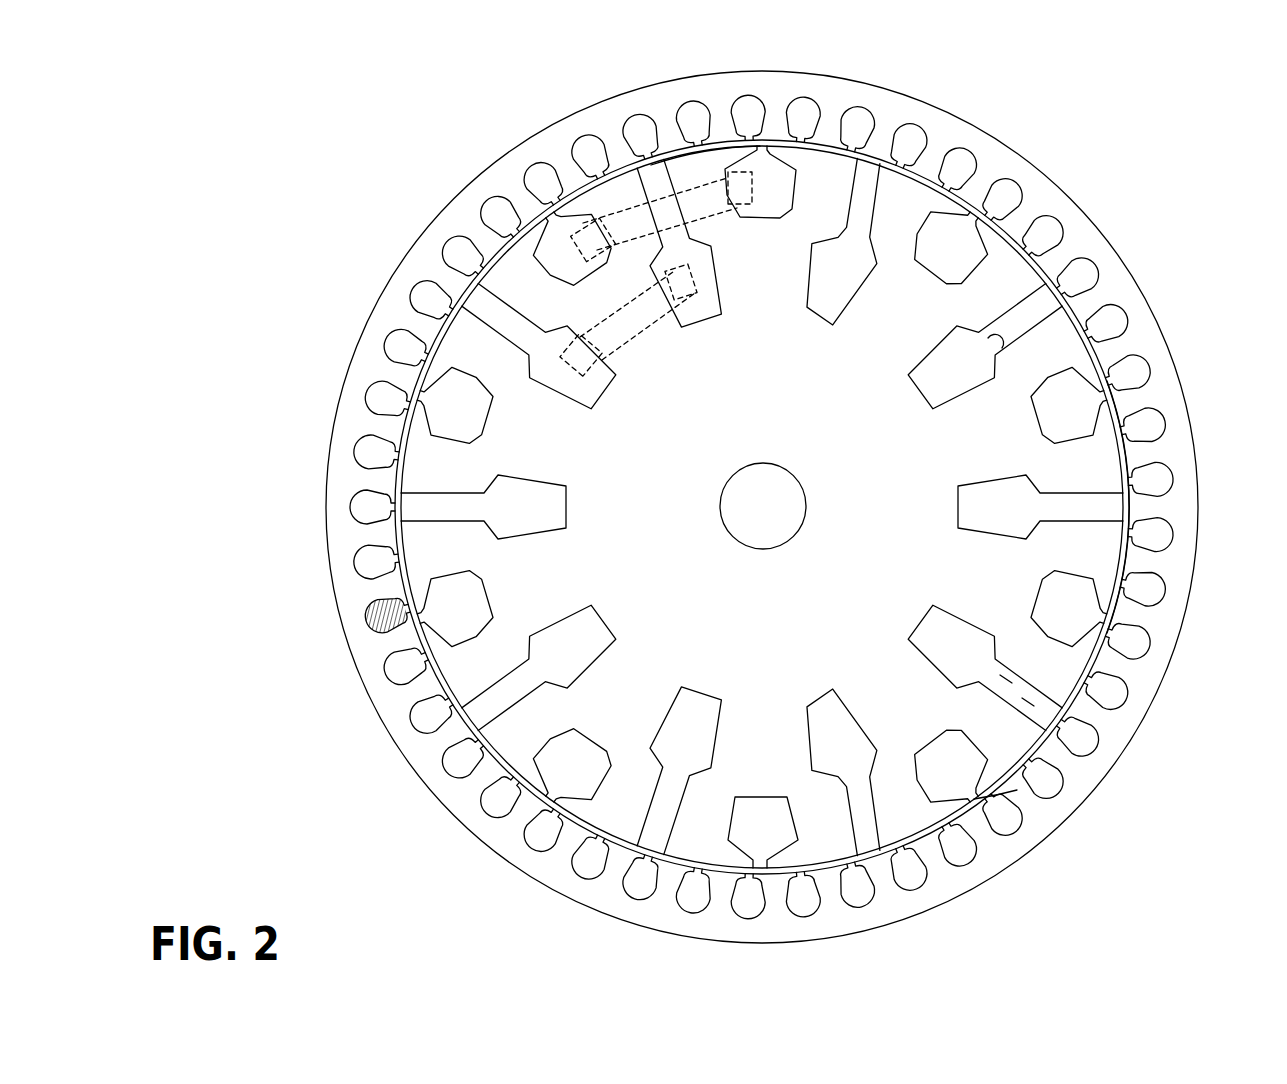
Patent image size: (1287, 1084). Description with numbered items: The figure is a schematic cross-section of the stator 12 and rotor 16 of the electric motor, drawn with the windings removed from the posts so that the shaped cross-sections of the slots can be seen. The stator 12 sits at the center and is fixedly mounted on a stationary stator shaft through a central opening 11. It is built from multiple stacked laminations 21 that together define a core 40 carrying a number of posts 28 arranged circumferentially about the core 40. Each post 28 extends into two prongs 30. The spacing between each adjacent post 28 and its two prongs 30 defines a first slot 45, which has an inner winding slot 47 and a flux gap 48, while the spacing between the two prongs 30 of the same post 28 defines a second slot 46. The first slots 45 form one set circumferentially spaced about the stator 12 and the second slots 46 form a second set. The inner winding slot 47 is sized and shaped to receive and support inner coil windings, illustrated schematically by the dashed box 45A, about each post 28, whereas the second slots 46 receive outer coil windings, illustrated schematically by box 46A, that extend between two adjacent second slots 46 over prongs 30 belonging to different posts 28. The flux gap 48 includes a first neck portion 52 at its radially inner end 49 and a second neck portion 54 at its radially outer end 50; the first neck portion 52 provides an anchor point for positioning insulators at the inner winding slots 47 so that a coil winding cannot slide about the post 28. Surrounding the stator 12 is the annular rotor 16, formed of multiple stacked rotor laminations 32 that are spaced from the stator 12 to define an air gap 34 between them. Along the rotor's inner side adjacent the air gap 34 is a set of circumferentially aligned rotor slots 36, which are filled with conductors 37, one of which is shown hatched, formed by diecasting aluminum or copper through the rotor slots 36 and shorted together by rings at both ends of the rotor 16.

The central opening 11 is at (756, 525).
The stator 12 is at (766, 412).
The rotor 16 is at (462, 795).
The stacked laminations 21 is at (715, 150).
The post 28 is at (985, 437).
The prong 30 is at (1057, 352).
The rotor lamination 32 is at (423, 780).
The air gap 34 is at (438, 679).
The rotor slot 36 is at (365, 622).
The conductor 37 is at (383, 612).
The core 40 is at (689, 428).
The first slot 45 is at (824, 275).
The inner coil winding 45A is at (600, 320).
The second slot 46 is at (962, 244).
The outer coil winding 46A is at (632, 207).
The inner winding slot 47 is at (966, 378).
The flux gap 48 is at (1006, 332).
The radially inner end 49 is at (1009, 688).
The radially outer end 50 is at (1029, 706).
The first neck portion 52 is at (980, 668).
The second neck portion 54 is at (1062, 756).